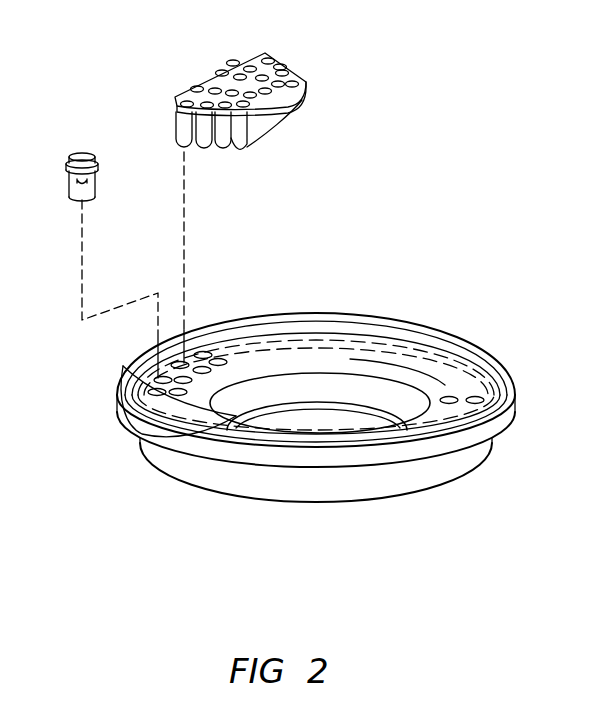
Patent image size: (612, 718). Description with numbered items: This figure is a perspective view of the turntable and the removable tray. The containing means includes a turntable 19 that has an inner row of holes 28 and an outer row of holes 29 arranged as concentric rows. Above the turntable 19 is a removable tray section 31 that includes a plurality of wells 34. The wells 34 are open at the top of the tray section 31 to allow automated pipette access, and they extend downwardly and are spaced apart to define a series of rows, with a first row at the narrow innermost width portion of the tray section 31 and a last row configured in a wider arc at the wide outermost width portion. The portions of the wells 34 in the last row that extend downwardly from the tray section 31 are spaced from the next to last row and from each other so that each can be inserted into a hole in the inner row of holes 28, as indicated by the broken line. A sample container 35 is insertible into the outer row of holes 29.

The turntable 19 is at (512, 410).
The inner row of holes 28 is at (139, 434).
The outer row of holes 29 is at (178, 366).
The removable tray section 31 is at (270, 53).
The wells 34 is at (207, 88).
The sample container 35 is at (80, 154).